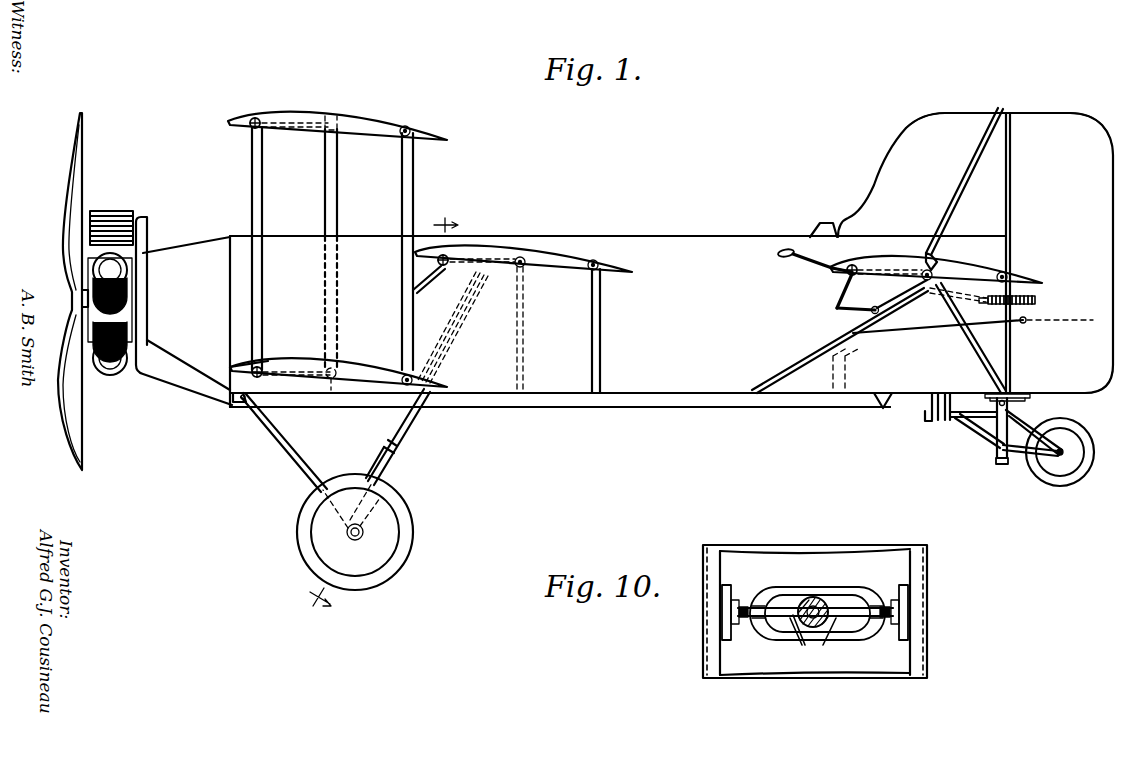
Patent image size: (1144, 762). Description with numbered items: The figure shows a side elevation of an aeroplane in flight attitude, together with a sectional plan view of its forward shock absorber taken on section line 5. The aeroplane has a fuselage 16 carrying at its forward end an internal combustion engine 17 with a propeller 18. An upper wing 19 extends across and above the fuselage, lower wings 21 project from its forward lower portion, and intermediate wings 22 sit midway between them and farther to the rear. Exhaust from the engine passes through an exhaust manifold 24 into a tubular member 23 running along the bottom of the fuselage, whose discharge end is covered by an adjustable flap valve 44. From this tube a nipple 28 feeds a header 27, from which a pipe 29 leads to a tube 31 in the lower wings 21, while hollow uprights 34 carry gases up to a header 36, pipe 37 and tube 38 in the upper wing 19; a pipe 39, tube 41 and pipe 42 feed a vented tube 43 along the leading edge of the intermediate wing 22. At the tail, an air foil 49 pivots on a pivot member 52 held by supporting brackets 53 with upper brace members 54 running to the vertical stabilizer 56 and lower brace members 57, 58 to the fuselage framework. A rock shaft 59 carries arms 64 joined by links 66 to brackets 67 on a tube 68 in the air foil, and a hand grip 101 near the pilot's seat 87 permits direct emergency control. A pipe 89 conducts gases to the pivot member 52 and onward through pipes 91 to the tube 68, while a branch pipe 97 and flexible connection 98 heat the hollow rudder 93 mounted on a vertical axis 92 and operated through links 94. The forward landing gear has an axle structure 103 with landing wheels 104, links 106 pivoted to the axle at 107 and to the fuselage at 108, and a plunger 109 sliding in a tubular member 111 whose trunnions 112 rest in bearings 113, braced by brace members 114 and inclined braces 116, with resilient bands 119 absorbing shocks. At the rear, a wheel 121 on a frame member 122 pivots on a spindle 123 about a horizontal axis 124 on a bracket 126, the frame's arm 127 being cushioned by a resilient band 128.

In FIG. 1, the section line 5 is at (384, 410).
In FIG. 1, the fuselage 16 is at (683, 237).
In FIG. 10, the fuselage 16 is at (921, 584).
In FIG. 1, the internal combustion engine 17 is at (118, 212).
In FIG. 1, the propeller 18 is at (62, 230).
In FIG. 1, the upper wing 19 is at (366, 114).
In FIG. 1, the lower wings 21 is at (348, 359).
In FIG. 1, the intermediate wings 22 is at (558, 250).
In FIG. 1, the tubular member 23 is at (590, 405).
In FIG. 1, the exhaust manifold 24 is at (143, 240).
In FIG. 1, the header 27 is at (341, 373).
In FIG. 1, the nipple 28 is at (315, 394).
In FIG. 1, the pipe 29 is at (285, 367).
In FIG. 1, the tube 31 is at (240, 369).
In FIG. 1, the hollow uprights 34 is at (338, 207).
In FIG. 1, the header 36 is at (334, 114).
In FIG. 1, the pipe 37 is at (284, 121).
In FIG. 1, the tube 38 is at (252, 118).
In FIG. 1, the pipe 39 is at (523, 343).
In FIG. 1, the tube 41 is at (521, 256).
In FIG. 1, the pipe 42 is at (480, 254).
In FIG. 1, the vented tube 43 is at (429, 283).
In FIG. 1, the flap valve 44 is at (887, 397).
In FIG. 1, the air foil 49 is at (978, 257).
In FIG. 1, the pivot member 52 is at (926, 270).
In FIG. 1, the supporting brackets 53 is at (944, 248).
In FIG. 1, the upper brace members 54 is at (972, 159).
In FIG. 1, the vertical stabilizer 56 is at (947, 113).
In FIG. 1, the lower brace member 57 is at (797, 366).
In FIG. 1, the lower brace member 58 is at (975, 365).
In FIG. 1, the rock shaft 59 is at (877, 306).
In FIG. 1, the arms 64 is at (837, 313).
In FIG. 1, the links 66 is at (836, 289).
In FIG. 1, the brackets 67 is at (848, 275).
In FIG. 1, the tube 68 is at (853, 264).
In FIG. 1, the pilot's seat 87 is at (820, 224).
In FIG. 1, the pipe 89 is at (853, 352).
In FIG. 1, the pipes 91 is at (893, 268).
In FIG. 1, the vertical axis 92 is at (1012, 112).
In FIG. 1, the hollow rudder 93 is at (1066, 114).
In FIG. 1, the links 94 is at (941, 331).
In FIG. 1, the branch pipe 97 is at (948, 298).
In FIG. 1, the flexible connection 98 is at (1037, 301).
In FIG. 1, the hand grip 101 is at (782, 256).
In FIG. 1, the axle structure 103 is at (364, 537).
In FIG. 1, the landing wheels 104 is at (408, 512).
In FIG. 1, the links 106 is at (283, 457).
In FIG. 1, the pivotal connection 107 is at (345, 524).
In FIG. 1, the pivotal connection 108 is at (240, 404).
In FIG. 1, the plunger 109 is at (403, 440).
In FIG. 10, the plunger 109 is at (814, 598).
In FIG. 1, the tubular member 111 is at (466, 321).
In FIG. 10, the tubular member 111 is at (795, 602).
In FIG. 10, the trunnions 112 is at (774, 636).
In FIG. 10, the bearings 113 is at (733, 600).
In FIG. 10, the brace members 114 is at (836, 593).
In FIG. 10, the inclined braces 116 is at (882, 605).
In FIG. 10, the resilient bands 119 is at (818, 632).
In FIG. 1, the wheel 121 is at (1085, 465).
In FIG. 1, the frame member 122 is at (1017, 455).
In FIG. 1, the spindle 123 is at (998, 465).
In FIG. 1, the horizontal axis 124 is at (1022, 400).
In FIG. 1, the bracket 126 is at (988, 396).
In FIG. 1, the arm 127 is at (958, 420).
In FIG. 1, the resilient band 128 is at (930, 405).